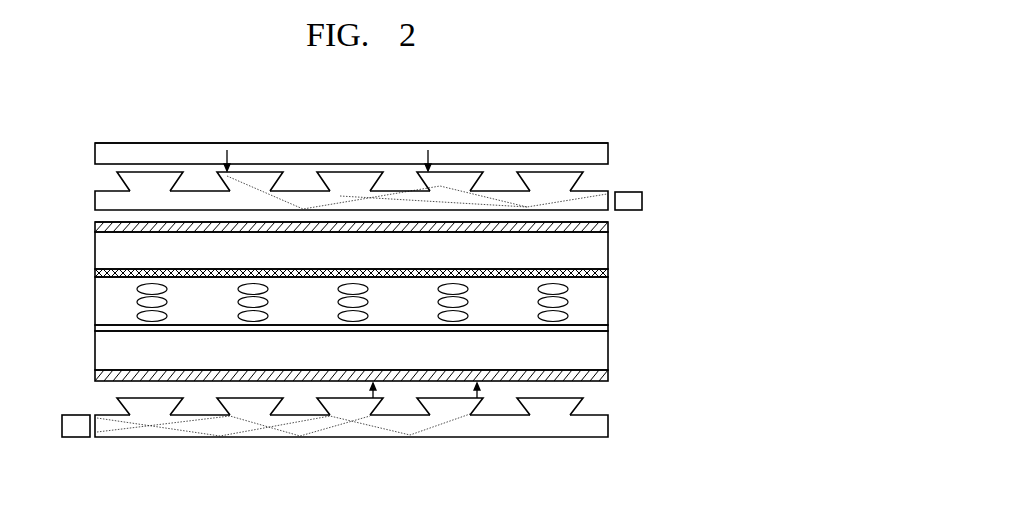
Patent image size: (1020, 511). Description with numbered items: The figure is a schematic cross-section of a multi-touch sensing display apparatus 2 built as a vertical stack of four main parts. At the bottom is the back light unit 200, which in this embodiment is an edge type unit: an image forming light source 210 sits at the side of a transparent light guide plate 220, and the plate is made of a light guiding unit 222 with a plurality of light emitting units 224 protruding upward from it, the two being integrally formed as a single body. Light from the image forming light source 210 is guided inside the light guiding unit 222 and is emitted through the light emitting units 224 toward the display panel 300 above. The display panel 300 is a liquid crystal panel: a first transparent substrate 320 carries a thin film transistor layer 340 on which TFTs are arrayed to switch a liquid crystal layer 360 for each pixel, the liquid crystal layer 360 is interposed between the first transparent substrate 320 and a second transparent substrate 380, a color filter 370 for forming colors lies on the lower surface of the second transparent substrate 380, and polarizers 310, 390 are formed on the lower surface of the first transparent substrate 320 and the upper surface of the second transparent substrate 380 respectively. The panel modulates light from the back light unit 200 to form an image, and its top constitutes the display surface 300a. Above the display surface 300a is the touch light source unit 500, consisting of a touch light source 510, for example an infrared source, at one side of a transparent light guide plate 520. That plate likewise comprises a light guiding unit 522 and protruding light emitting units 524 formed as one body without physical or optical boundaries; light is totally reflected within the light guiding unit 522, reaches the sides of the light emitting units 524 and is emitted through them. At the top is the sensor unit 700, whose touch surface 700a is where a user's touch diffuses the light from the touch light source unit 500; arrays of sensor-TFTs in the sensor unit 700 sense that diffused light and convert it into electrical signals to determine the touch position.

The display apparatus 2 is at (93, 108).
The sensor unit 700 is at (326, 138).
The touch surface 700a is at (582, 143).
The touch light source unit 500 is at (377, 180).
The touch light source 510 is at (642, 202).
The transparent light guide plate 520 is at (402, 179).
The light guiding unit 522 is at (608, 193).
The light emitting units 524 is at (588, 173).
The display panel 300 is at (374, 300).
The display surface 300a is at (608, 222).
The polarizer 390 is at (608, 229).
The second transparent substrate 380 is at (610, 253).
The color filter 370 is at (608, 272).
The liquid crystal layer 360 is at (608, 305).
The thin film transistor layer 340 is at (608, 329).
The first transparent substrate 320 is at (608, 353).
The polarizer 310 is at (608, 376).
The back light unit 200 is at (353, 428).
The image forming light source 210 is at (55, 397).
The transparent light guide plate 220 is at (393, 416).
The light guiding unit 222 is at (608, 428).
The light emitting units 224 is at (588, 399).